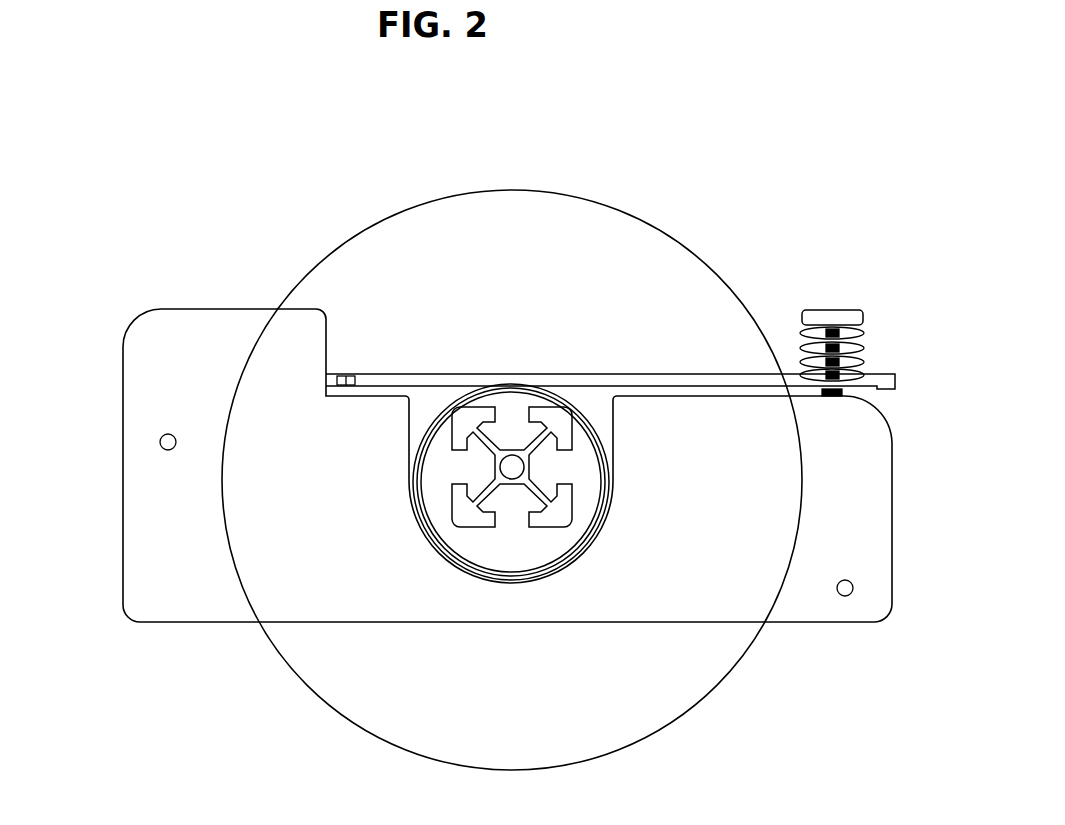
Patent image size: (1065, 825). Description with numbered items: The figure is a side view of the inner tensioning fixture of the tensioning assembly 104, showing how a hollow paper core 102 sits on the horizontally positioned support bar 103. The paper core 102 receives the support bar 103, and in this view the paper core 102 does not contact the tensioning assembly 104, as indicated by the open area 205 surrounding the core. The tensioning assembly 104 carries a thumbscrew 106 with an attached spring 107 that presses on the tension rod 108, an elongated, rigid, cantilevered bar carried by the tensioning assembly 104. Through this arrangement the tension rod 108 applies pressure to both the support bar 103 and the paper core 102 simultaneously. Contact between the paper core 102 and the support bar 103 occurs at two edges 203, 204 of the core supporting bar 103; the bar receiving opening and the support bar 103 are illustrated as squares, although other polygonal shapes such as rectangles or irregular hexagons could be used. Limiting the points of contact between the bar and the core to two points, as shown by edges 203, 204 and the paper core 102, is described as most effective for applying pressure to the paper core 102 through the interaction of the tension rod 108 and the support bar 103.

The paper core 102 is at (587, 540).
The support bar 103 is at (527, 440).
The tensioning assembly 104 is at (160, 312).
The thumbscrew 106 is at (828, 310).
The spring 107 is at (800, 330).
The tension rod 108 is at (887, 377).
The edge of the paper core supporting bar 203 is at (457, 405).
The edge of the paper core supporting bar 204 is at (556, 412).
The open area 205 is at (462, 562).